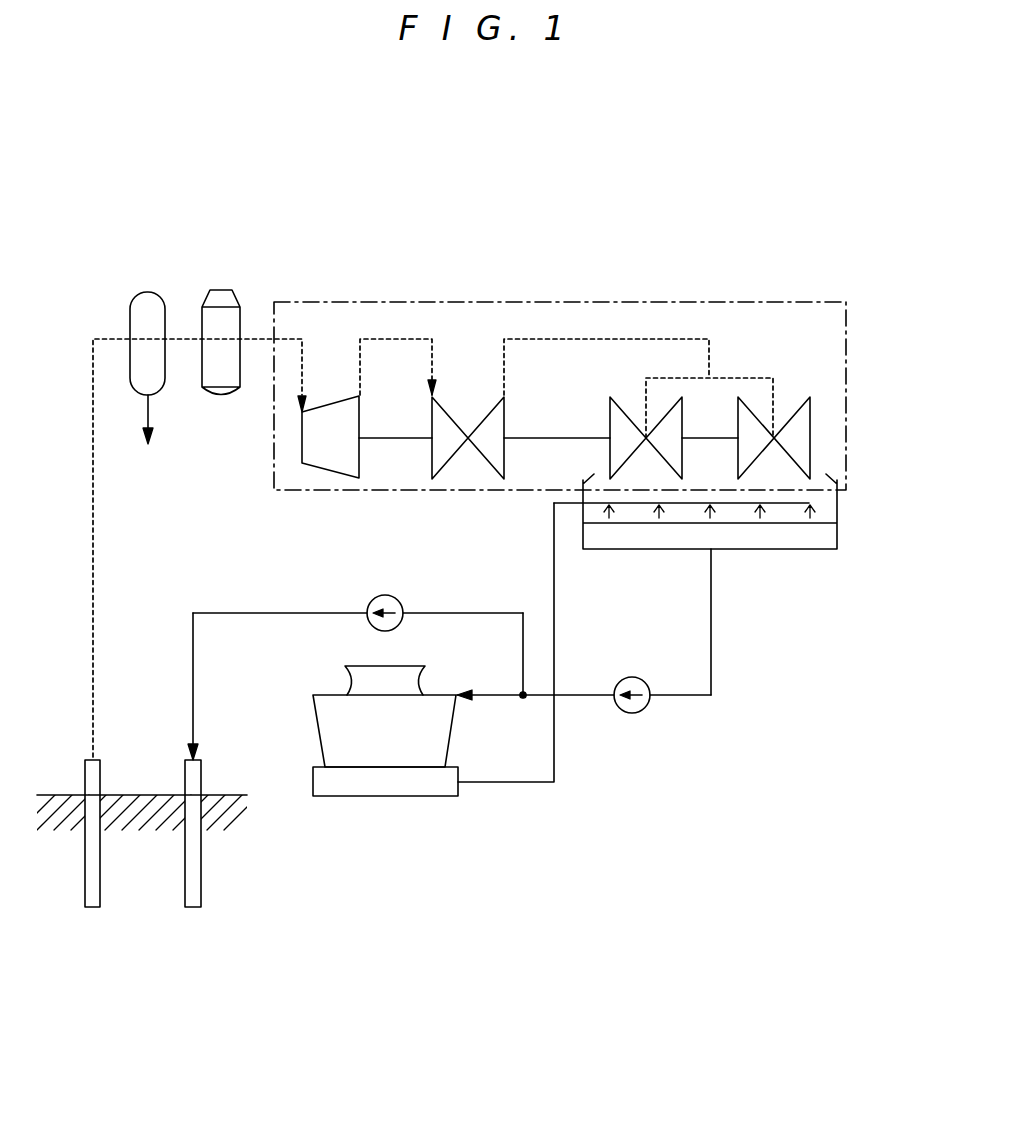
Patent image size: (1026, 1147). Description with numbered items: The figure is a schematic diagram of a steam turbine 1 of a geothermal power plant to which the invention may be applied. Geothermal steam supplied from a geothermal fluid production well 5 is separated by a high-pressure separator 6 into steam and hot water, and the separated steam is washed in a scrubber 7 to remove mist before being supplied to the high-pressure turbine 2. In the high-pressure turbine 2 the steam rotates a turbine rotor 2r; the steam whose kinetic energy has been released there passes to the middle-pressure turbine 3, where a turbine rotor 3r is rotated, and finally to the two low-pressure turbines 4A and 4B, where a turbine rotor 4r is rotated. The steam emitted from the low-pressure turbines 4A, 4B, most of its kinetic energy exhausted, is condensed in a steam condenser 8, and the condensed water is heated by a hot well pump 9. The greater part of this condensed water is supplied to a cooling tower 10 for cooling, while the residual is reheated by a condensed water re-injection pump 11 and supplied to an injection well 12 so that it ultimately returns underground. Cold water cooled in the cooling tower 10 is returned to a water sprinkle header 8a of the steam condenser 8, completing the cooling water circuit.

The steam turbine 1 is at (776, 301).
The high-pressure turbine 2 is at (328, 410).
The turbine rotor 2r is at (386, 436).
The middle-pressure turbine 3 is at (455, 426).
The turbine rotor 3r is at (549, 436).
The low-pressure turbine 4A is at (627, 412).
The low-pressure turbine 4B is at (793, 410).
The turbine rotor 4r is at (703, 437).
The geothermal fluid production well 5 is at (93, 910).
The high-pressure separator 6 is at (149, 291).
The scrubber 7 is at (223, 290).
The steam condenser 8 is at (838, 533).
The water sprinkle header 8a is at (793, 500).
The hot well pump 9 is at (636, 680).
The cooling tower 10 is at (383, 800).
The condensed water re-injection pump 11 is at (393, 596).
The injection well 12 is at (193, 910).